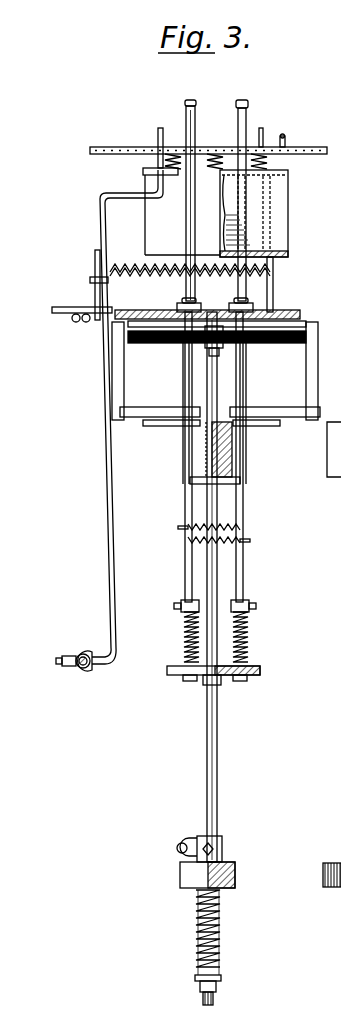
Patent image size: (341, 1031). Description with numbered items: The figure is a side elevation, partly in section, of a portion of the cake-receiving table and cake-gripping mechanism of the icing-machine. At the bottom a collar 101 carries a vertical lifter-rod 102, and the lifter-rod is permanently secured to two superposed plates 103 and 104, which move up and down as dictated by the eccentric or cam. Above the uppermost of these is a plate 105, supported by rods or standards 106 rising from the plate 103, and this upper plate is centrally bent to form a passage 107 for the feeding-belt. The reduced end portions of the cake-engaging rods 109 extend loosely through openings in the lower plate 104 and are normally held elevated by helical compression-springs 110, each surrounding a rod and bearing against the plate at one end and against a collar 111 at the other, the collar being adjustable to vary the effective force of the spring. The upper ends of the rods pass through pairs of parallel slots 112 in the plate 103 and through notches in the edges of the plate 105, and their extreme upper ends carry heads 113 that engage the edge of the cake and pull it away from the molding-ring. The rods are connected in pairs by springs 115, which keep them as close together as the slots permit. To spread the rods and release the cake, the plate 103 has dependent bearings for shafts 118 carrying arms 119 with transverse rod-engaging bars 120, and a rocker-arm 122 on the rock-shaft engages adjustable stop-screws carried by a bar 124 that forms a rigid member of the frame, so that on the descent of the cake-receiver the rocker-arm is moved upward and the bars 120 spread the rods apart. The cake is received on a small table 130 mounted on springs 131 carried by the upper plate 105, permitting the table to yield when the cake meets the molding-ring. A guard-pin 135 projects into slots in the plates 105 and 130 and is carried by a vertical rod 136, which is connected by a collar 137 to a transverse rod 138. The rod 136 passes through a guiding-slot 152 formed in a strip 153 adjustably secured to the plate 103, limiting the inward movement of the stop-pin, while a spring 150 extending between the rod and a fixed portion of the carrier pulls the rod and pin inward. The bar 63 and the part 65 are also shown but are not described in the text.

The top bar 63 is at (313, 147).
The post 65 is at (283, 137).
The collar 101 is at (223, 845).
The lifter-rod 102 is at (218, 779).
The plate 103 is at (292, 312).
The plate 104 is at (262, 677).
The plate 105 is at (282, 223).
The rods or standards 106 is at (273, 285).
The passage 107 is at (282, 190).
The cake-engaging rod 109 is at (185, 579).
The helical compression-spring 110 is at (183, 638).
The collar 111 is at (256, 608).
The slot 112 is at (194, 307).
The head 113 is at (246, 106).
The spring 115 is at (235, 529).
The shaft 118 is at (166, 343).
The arm 119 is at (124, 395).
The rod-engaging bar 120 is at (137, 420).
The rocker-arm 122 is at (219, 356).
The bar 124 is at (228, 463).
The cake-receiving table 130 is at (196, 140).
The spring 131 is at (261, 128).
The guard-pin 135 is at (160, 128).
The rod 136 is at (108, 551).
The collar 137 is at (83, 653).
The transverse rod 138 is at (77, 670).
The spring 150 is at (190, 222).
The guiding-slot 152 is at (72, 305).
The strip 153 is at (93, 274).